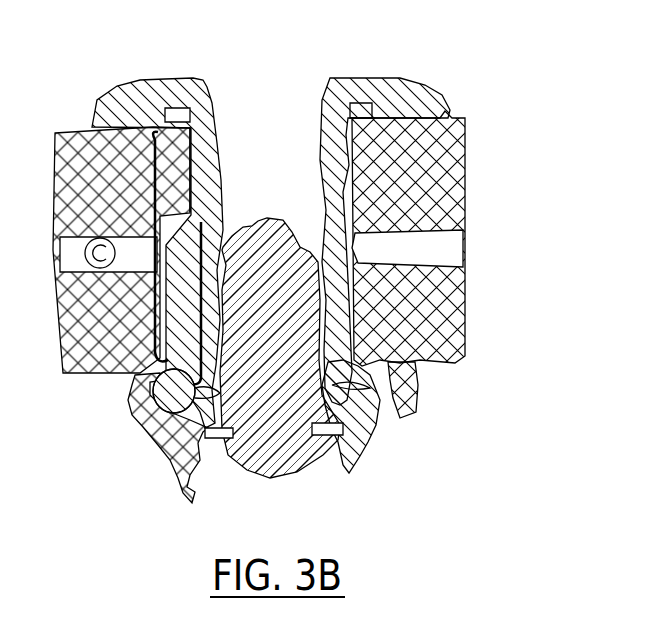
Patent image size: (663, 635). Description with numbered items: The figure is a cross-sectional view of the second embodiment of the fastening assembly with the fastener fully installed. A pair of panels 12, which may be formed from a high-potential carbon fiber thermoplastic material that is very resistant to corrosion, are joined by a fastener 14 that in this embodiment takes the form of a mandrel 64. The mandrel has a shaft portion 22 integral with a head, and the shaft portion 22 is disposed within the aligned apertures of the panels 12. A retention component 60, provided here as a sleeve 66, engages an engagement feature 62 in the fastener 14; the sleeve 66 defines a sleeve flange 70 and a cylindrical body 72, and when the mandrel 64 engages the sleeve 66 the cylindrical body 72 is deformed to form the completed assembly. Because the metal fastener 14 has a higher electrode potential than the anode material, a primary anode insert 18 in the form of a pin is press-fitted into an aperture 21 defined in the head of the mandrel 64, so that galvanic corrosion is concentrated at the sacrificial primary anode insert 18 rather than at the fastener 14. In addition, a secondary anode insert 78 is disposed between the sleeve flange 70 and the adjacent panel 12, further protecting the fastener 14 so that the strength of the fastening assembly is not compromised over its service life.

The panel 12 is at (442, 185).
The fastener 14 is at (283, 347).
The mandrel 64 is at (258, 173).
The primary anode insert 18 is at (360, 410).
The aperture 21 is at (360, 445).
The shaft portion 22 is at (177, 256).
The secondary anode insert 78 is at (173, 112).
The retention component 60 is at (210, 163).
The sleeve 66 is at (206, 171).
The engagement feature 62 is at (307, 458).
The sleeve flange 70 is at (102, 110).
The cylindrical body 72 is at (130, 315).